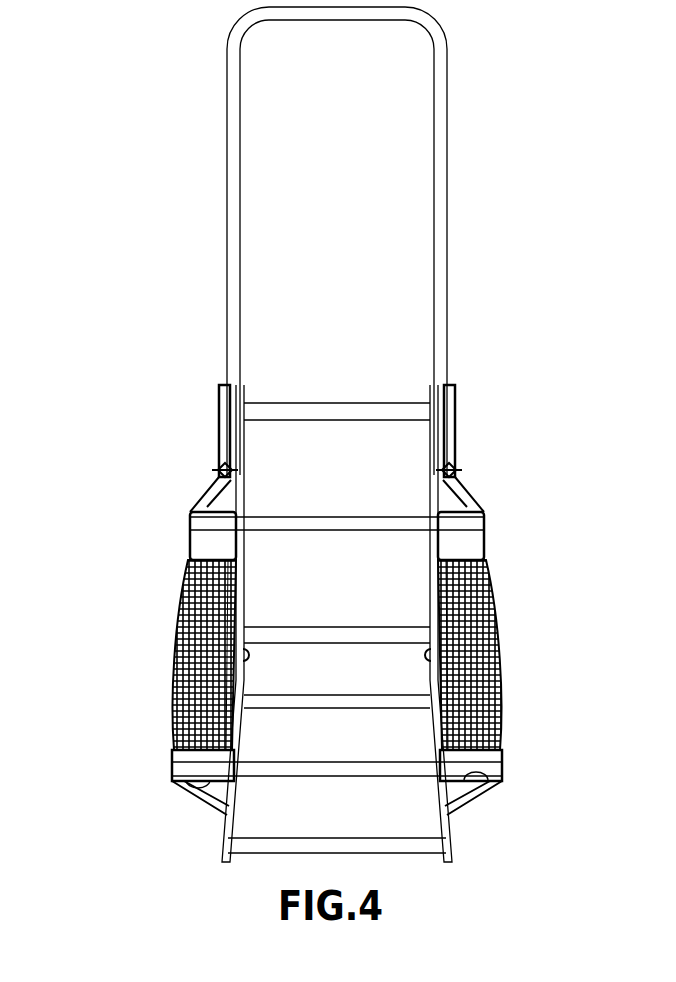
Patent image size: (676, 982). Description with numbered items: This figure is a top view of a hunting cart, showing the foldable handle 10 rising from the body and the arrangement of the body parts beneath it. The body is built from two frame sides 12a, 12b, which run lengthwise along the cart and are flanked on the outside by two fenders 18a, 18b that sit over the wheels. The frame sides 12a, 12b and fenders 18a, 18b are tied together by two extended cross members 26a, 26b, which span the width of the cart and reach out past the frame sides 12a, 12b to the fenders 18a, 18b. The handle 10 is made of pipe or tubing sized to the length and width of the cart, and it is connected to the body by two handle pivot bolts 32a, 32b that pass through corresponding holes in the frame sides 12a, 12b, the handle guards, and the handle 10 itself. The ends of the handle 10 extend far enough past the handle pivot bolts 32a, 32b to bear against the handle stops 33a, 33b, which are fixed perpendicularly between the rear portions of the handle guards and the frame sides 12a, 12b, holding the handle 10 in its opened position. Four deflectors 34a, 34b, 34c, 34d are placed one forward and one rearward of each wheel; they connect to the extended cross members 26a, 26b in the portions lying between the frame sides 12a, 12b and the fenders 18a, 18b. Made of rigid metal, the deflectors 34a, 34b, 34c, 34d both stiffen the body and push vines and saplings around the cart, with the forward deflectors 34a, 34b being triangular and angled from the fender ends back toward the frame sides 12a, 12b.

The handle 10 is at (440, 175).
The frame side 12a is at (240, 676).
The frame side 12b is at (434, 676).
The fender 18a is at (190, 541).
The fender 18b is at (486, 545).
The extended cross member 26a is at (330, 520).
The extended cross member 26b is at (336, 770).
The handle pivot bolt 32a is at (220, 430).
The handle pivot bolt 32b is at (454, 430).
The handle stop 33a is at (228, 466).
The handle stop 33b is at (446, 468).
The deflector 34a is at (218, 502).
The deflector 34b is at (453, 500).
The deflector 34c is at (204, 793).
The deflector 34d is at (468, 793).